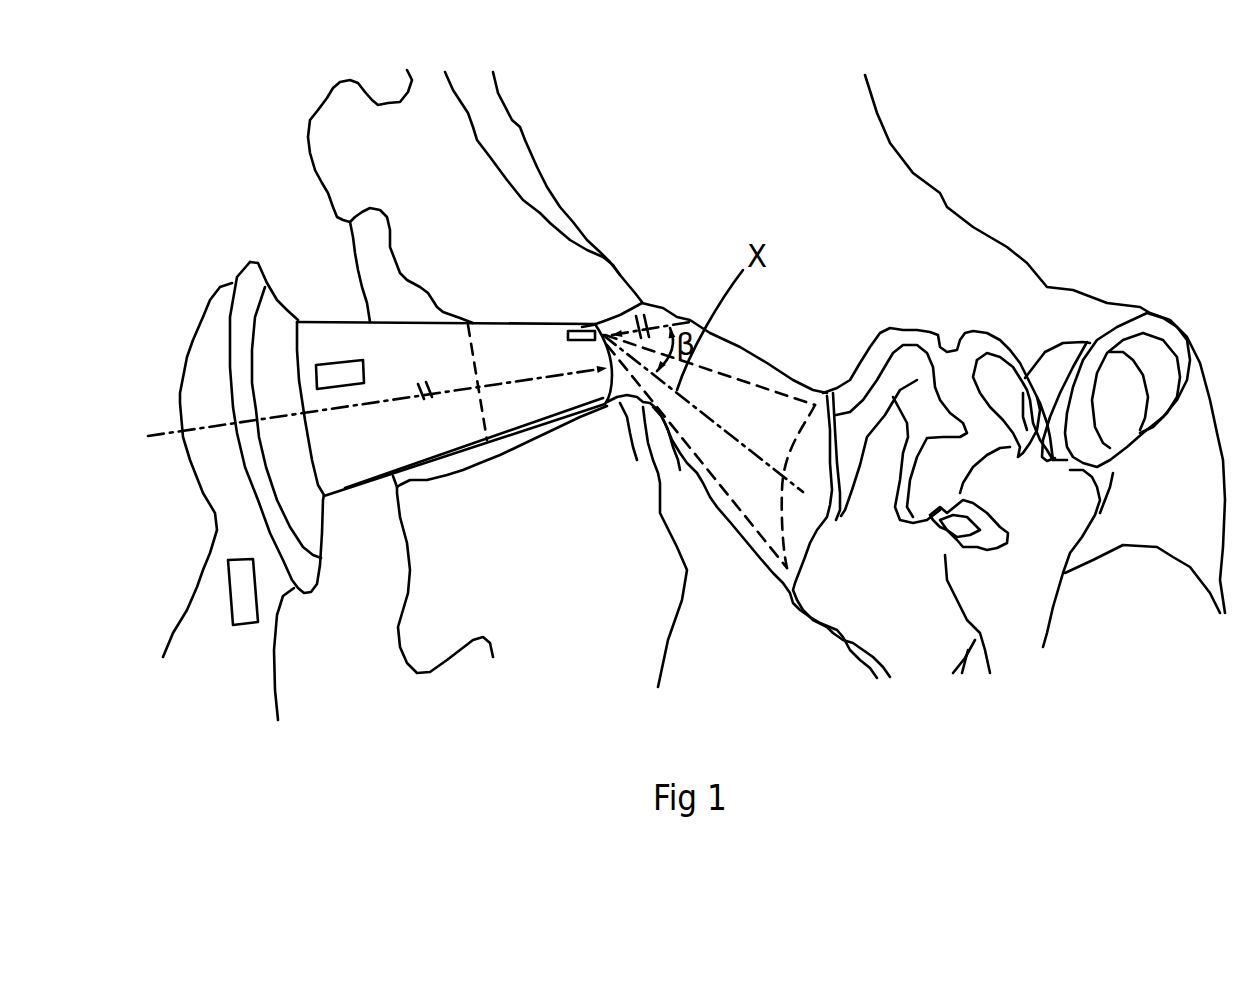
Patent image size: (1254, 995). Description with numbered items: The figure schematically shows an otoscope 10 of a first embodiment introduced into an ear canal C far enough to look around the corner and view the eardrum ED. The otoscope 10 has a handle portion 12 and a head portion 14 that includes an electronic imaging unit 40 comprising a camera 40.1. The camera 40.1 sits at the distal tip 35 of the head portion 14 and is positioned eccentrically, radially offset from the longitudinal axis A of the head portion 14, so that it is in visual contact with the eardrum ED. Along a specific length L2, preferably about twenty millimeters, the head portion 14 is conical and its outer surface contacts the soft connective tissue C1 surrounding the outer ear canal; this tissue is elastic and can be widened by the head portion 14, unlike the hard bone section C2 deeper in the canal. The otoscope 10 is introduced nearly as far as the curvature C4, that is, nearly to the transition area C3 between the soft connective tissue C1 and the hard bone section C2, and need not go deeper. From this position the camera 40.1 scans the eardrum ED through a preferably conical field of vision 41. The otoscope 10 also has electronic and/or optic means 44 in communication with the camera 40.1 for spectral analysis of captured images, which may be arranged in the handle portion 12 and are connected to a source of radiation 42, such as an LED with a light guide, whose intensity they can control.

The otoscope 10 is at (361, 469).
The handle portion 12 is at (247, 678).
The head portion 14 is at (373, 489).
The distal tip 35 is at (655, 546).
The electronic imaging unit 40 is at (550, 318).
The camera 40.1 is at (570, 335).
The field of vision 41 is at (717, 388).
The source of radiation 42 is at (338, 366).
The electronic and/or optic means 44 is at (230, 588).
The longitudinal axis A is at (146, 439).
The ear canal C is at (673, 306).
The soft connective tissue C1 is at (487, 258).
The hard bone section C2 is at (877, 230).
The transition area C3 is at (643, 302).
The curvature C4 is at (678, 500).
The specific length L2 is at (543, 377).
The eardrum ED is at (841, 535).